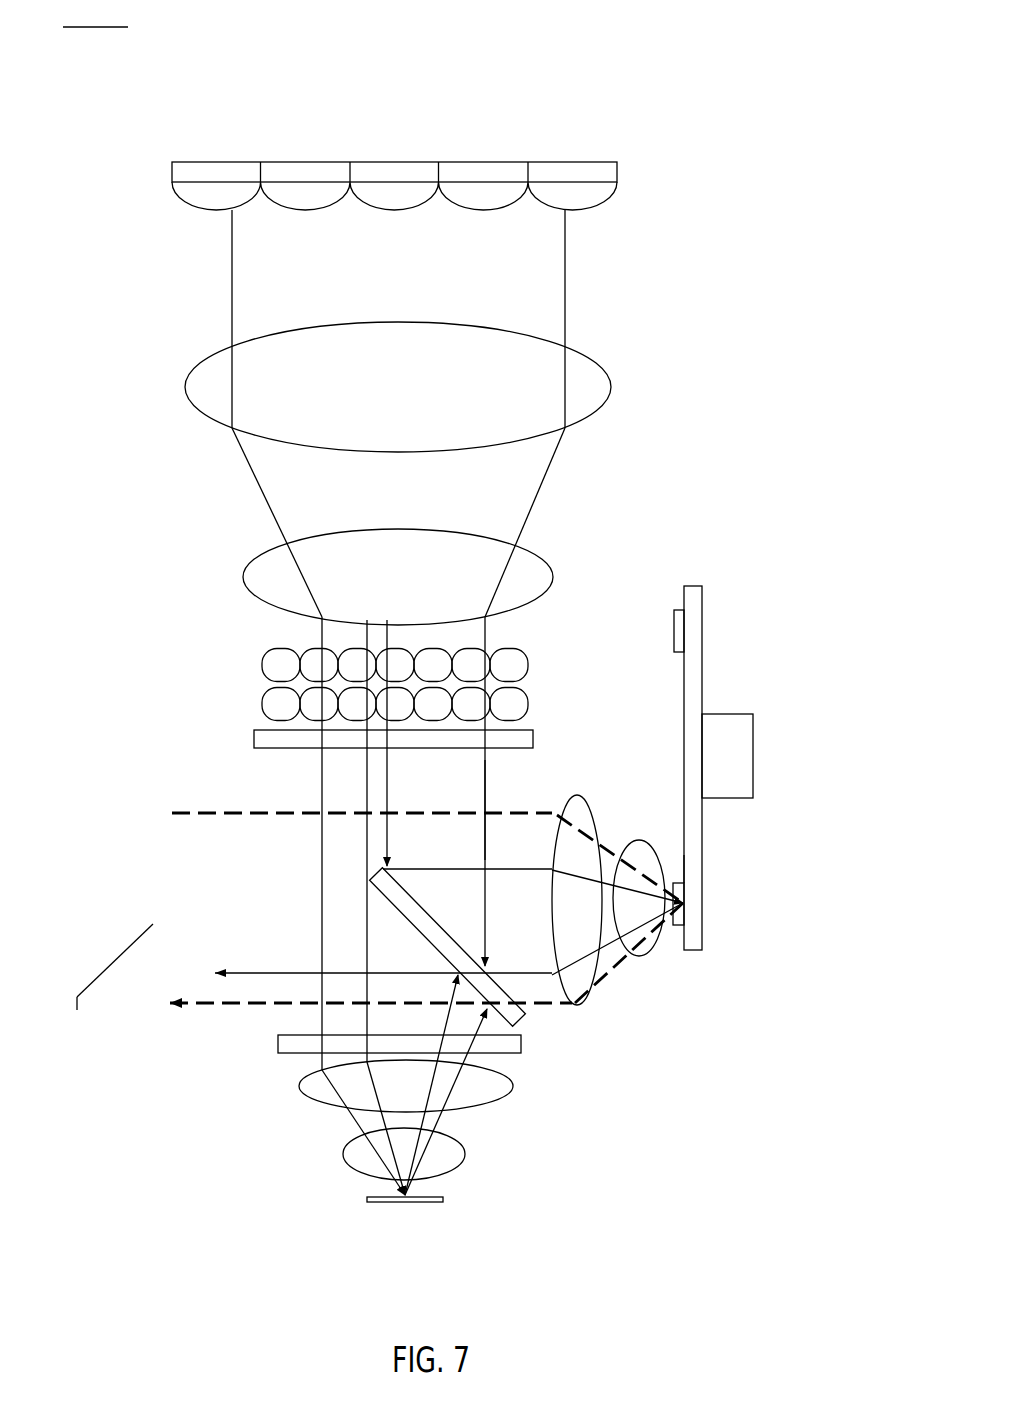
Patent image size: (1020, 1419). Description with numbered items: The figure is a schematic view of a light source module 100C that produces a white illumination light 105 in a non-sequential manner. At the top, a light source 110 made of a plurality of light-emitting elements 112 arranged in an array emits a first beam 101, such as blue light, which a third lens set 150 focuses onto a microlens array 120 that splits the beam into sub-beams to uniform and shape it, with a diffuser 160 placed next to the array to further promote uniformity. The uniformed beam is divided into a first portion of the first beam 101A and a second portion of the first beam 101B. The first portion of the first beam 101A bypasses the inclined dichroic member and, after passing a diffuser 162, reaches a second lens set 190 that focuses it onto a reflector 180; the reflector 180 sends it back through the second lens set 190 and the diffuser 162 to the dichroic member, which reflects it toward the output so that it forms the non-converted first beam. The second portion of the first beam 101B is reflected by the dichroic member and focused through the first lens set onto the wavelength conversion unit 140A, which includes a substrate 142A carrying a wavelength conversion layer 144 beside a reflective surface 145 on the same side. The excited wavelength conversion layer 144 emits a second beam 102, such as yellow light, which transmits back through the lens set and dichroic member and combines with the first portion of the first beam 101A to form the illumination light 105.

The light source module 100C is at (95, 14).
The light source 110 is at (590, 172).
The light-emitting elements 112 is at (198, 192).
The first beam 101 is at (565, 248).
The third lens set 150 is at (600, 405).
The microlens array 120 is at (527, 665).
The diffuser 160 is at (533, 738).
The first portion of the first beam 101A is at (262, 963).
The second portion of the first beam 101B is at (518, 810).
The second beam 102 is at (188, 998).
The illumination light 105 is at (109, 967).
The wavelength conversion unit 140A is at (738, 799).
The substrate 142A is at (695, 680).
The wavelength conversion layer 144 is at (678, 928).
The reflective surface 145 is at (686, 864).
The diffuser 162 is at (288, 1040).
The second lens set 190 is at (313, 1100).
The reflector 180 is at (388, 1203).